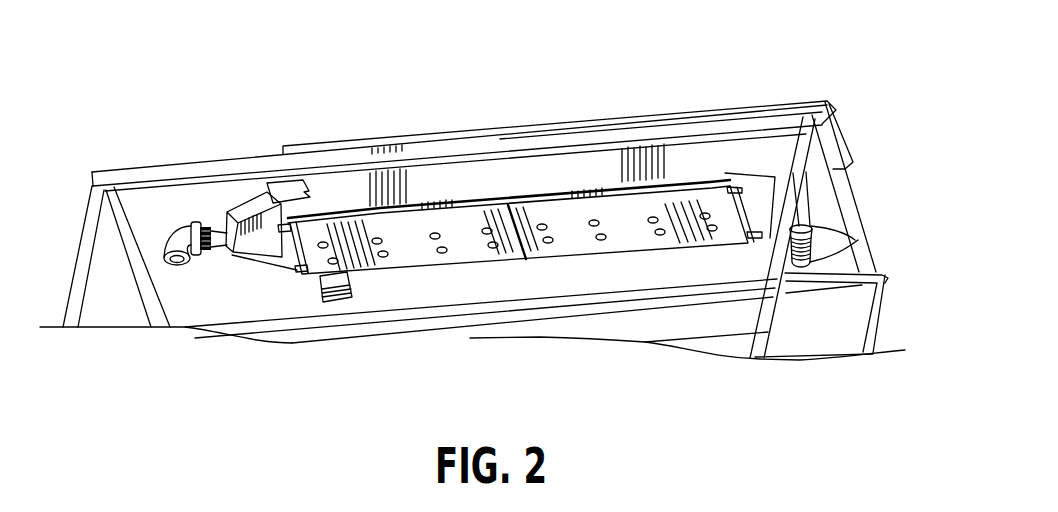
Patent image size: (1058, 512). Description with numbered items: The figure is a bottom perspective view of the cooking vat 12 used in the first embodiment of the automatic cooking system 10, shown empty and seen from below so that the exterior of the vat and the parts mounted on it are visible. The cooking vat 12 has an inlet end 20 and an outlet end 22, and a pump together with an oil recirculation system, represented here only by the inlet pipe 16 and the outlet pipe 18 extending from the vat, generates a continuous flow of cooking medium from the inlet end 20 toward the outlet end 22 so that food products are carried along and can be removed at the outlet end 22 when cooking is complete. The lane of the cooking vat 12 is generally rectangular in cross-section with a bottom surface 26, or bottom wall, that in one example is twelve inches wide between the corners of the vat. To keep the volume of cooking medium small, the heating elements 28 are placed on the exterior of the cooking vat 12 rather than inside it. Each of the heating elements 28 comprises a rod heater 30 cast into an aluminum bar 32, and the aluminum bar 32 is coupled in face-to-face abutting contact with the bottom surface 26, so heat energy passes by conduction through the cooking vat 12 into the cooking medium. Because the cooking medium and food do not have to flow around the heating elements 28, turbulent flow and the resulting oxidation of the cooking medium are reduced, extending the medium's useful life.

The automatic cooking system 10 is at (322, 99).
The cooking vat 12 is at (542, 122).
The inlet pipe 16 is at (203, 252).
The outlet pipe 18 is at (818, 256).
The inlet end 20 is at (282, 150).
The outlet end 22 is at (835, 151).
The bottom surface 26 is at (766, 196).
The heating elements 28 is at (487, 275).
The rod heater 30 is at (281, 234).
The aluminum bar 32 is at (418, 252).